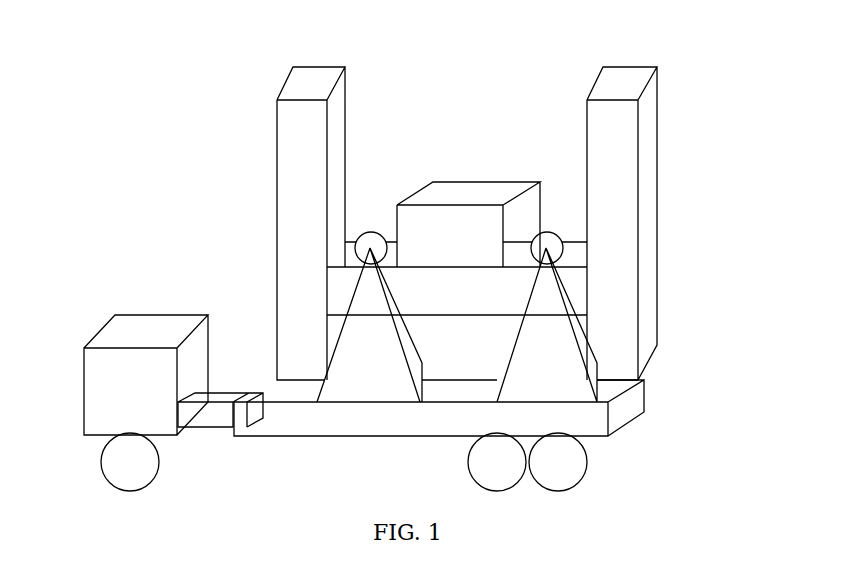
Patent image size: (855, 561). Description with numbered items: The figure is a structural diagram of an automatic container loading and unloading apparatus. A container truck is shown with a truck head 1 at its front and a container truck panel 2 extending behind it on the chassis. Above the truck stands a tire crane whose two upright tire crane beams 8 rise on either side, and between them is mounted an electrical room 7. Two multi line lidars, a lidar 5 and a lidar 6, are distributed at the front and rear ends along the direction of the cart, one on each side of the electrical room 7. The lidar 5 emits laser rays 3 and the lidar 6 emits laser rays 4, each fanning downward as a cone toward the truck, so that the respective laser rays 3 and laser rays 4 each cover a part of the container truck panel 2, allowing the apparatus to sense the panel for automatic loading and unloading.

The truck head 1 is at (80, 417).
The container truck panel 2 is at (615, 400).
The laser ray 3 is at (358, 358).
The laser ray 4 is at (548, 365).
The lidar 5 is at (354, 250).
The lidar 6 is at (564, 250).
The electrical room 7 is at (470, 184).
The tire crane beam 8 is at (622, 68).